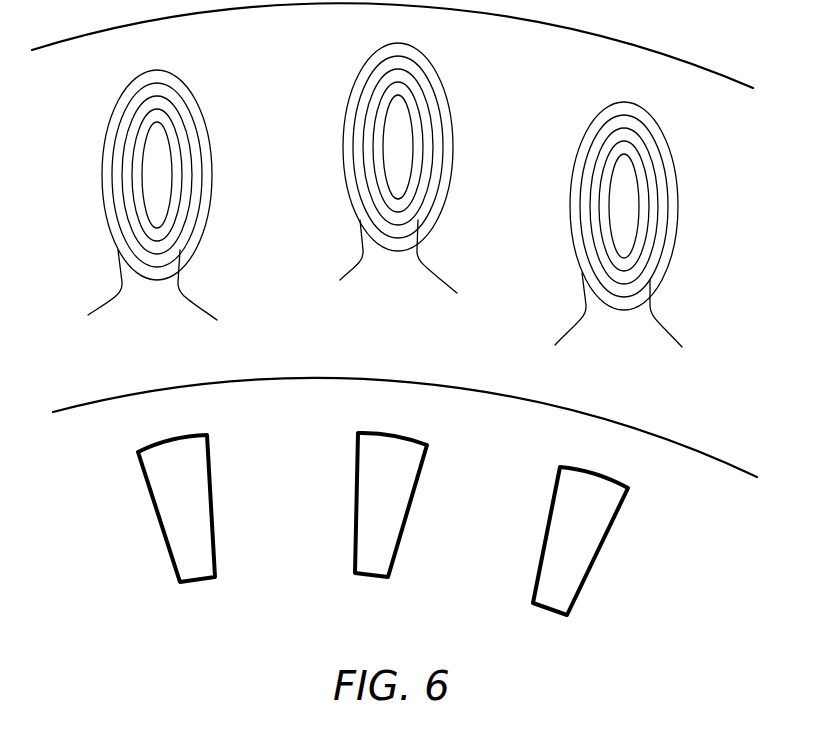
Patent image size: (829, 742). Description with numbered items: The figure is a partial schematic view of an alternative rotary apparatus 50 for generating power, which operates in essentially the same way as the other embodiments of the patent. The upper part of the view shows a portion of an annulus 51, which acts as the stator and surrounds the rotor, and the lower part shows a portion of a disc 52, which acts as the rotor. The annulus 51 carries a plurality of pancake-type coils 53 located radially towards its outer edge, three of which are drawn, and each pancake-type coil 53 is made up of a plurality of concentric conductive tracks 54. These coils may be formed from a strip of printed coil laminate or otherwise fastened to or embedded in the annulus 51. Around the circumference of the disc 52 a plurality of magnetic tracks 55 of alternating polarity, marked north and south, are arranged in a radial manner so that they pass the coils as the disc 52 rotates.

The rotary apparatus 50 is at (98, 497).
The annulus 51 is at (394, 348).
The disc 52 is at (466, 633).
The pancake-type coil 53 is at (682, 146).
The conductive track 54 is at (436, 72).
The magnetic track 55 is at (183, 553).